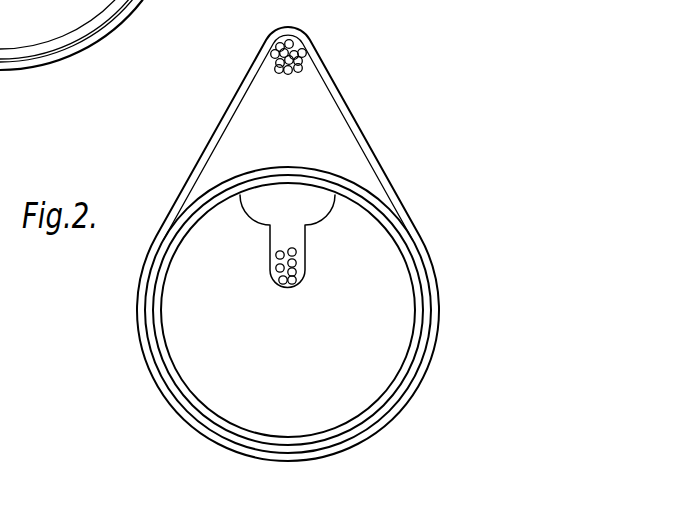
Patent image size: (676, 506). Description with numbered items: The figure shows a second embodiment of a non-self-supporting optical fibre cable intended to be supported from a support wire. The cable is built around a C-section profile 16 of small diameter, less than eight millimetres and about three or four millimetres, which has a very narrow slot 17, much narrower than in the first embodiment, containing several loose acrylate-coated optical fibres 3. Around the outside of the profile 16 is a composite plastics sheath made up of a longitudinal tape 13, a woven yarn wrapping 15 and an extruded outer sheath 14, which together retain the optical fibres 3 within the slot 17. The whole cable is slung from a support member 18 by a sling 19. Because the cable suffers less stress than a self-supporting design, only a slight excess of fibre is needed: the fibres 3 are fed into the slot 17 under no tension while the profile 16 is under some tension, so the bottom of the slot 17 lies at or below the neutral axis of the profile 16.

The optical fibres 3 is at (292, 287).
The longitudinal tape 13 is at (148, 285).
The extruded outer sheath 14 is at (158, 370).
The woven yarn wrapping 15 is at (152, 322).
The C-section profile 16 is at (273, 310).
The narrow slot 17 is at (277, 223).
The support member 18 is at (300, 55).
The sling 19 is at (358, 120).